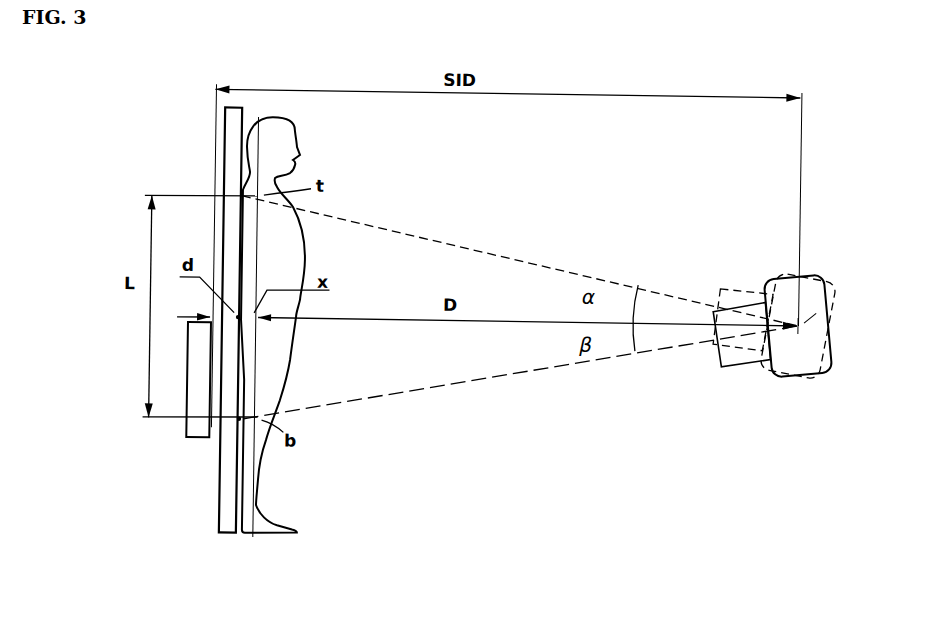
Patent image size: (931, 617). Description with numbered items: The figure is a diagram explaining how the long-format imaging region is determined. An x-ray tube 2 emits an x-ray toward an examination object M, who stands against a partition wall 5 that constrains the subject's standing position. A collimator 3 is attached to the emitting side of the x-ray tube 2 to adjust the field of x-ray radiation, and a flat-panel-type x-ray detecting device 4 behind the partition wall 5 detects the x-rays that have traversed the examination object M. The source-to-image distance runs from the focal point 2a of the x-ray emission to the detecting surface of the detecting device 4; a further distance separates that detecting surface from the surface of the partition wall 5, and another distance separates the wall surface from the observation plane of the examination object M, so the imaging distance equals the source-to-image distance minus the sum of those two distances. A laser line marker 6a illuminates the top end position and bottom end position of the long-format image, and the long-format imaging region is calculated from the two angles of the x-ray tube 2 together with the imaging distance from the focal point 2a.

The x-ray tube 2 is at (807, 280).
The focal point 2a is at (804, 323).
The collimator 3 is at (738, 361).
The flat-panel-type x-ray detecting device 4 is at (199, 446).
The partition wall 5 is at (230, 506).
The laser line marker 6a is at (720, 359).
The examination object M is at (273, 536).